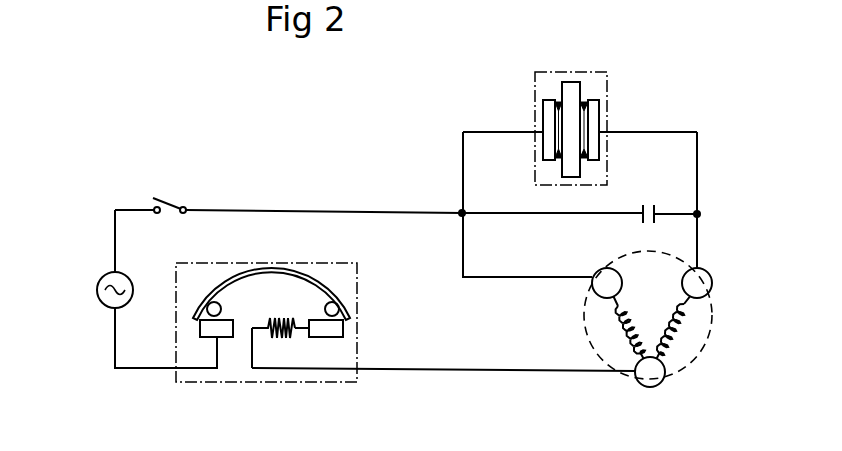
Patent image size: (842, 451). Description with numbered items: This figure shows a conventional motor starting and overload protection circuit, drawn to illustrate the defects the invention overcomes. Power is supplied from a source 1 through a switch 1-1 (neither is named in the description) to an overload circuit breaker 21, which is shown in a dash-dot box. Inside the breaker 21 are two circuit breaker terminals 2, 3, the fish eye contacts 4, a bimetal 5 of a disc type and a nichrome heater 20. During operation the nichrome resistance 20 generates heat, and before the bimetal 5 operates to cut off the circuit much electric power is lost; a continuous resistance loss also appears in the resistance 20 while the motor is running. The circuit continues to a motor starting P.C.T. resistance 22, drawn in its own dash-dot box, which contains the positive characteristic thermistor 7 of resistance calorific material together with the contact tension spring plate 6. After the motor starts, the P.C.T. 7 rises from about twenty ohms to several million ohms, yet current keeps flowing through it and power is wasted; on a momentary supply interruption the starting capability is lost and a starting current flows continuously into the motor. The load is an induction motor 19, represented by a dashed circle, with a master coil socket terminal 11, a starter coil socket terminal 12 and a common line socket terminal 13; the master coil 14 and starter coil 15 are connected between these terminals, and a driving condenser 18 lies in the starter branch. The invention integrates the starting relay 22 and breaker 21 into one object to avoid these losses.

The AC power source 1 is at (97, 283).
The switch 1-1 is at (170, 204).
The circuit breaker terminal 2 is at (214, 332).
The circuit breaker terminal 3 is at (343, 330).
The fish eye contacts 4 is at (310, 278).
The bimetal of a disc type 5 is at (213, 292).
The contact tension spring plate 6 is at (545, 121).
The positive characteristic thermistor 7 is at (575, 100).
The master coil socket terminal 11 is at (595, 290).
The starter coil socket terminal 12 is at (712, 283).
The common line socket terminal 13 is at (662, 382).
The master coil 14 is at (625, 330).
The starter coil 15 is at (675, 330).
The driving condenser 18 is at (641, 220).
The induction motor 19 is at (670, 253).
The nichrome heater 20 is at (278, 335).
The overload circuit breaker 21 is at (325, 263).
The motor starting P.C.T. resistance 22 is at (610, 108).